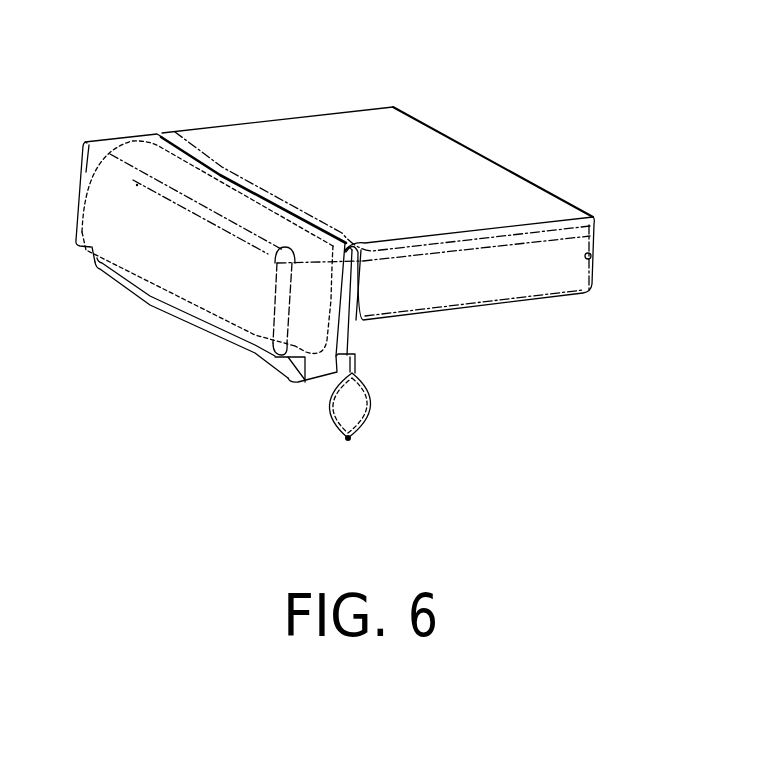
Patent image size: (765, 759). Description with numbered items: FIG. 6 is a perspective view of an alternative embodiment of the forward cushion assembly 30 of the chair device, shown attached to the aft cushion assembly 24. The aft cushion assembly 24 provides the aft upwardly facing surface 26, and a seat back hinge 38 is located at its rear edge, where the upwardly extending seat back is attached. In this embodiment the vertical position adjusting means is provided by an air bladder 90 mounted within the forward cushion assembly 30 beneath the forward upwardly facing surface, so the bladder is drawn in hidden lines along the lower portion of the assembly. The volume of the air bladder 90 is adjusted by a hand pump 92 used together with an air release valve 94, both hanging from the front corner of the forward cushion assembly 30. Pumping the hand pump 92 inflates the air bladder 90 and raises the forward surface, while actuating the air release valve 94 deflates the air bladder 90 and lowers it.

The aft cushion assembly 24 is at (473, 268).
The aft upwardly facing surface 26 is at (385, 186).
The forward cushion assembly 30 is at (90, 143).
The seat back hinge 38 is at (591, 258).
The air bladder 90 is at (222, 282).
The hand pump 92 is at (348, 402).
The air release valve 94 is at (350, 440).